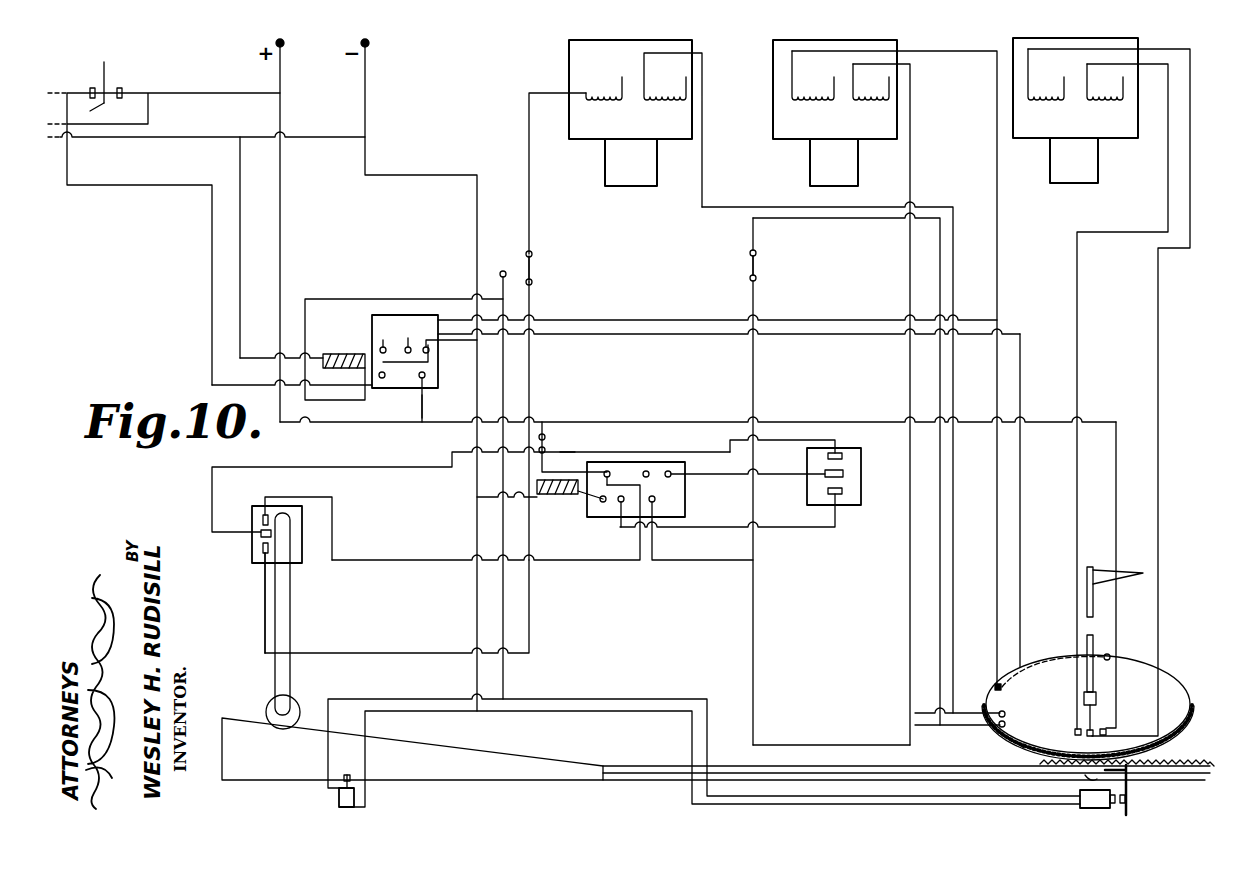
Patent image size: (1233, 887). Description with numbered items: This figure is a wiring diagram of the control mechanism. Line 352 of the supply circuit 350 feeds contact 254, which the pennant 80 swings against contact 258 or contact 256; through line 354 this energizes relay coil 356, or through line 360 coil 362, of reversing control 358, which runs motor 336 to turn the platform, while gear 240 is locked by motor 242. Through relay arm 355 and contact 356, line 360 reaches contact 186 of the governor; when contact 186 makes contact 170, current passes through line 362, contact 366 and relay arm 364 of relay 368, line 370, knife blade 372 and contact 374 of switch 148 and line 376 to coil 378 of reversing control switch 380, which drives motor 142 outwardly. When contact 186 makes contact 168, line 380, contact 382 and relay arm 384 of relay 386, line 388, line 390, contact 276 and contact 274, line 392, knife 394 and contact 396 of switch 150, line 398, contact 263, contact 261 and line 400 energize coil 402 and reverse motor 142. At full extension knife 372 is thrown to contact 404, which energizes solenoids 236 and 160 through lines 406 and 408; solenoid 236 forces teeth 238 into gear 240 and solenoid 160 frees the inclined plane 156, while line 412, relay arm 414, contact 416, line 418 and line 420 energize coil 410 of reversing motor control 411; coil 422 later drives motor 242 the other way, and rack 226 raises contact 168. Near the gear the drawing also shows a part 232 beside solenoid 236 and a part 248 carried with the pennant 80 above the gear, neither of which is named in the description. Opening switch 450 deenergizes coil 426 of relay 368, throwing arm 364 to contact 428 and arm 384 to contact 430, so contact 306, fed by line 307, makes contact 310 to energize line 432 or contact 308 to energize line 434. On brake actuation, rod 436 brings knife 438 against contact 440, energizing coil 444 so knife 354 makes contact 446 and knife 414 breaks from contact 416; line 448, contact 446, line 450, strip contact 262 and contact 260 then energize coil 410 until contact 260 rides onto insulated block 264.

The contact 440 is at (92, 88).
The rod 436 is at (108, 66).
The knife 438 is at (101, 107).
The line 352 is at (282, 78).
The supply circuit 350 is at (293, 163).
The reversing control switch 380 is at (620, 40).
The coil 378 is at (608, 103).
The coil 402 is at (668, 103).
The motor 142 is at (630, 186).
The reversing motor control 411 is at (850, 40).
The coil 410 is at (816, 103).
The coil 422 is at (876, 103).
The motor 242 is at (810, 164).
The reversing control 358 is at (1080, 38).
The coil 362 is at (1047, 103).
The relay coil 356 is at (1107, 103).
The motor 336 is at (1098, 163).
The line 420 is at (1000, 196).
The line 354 is at (1079, 364).
The line 360 is at (1160, 364).
The line 307 is at (560, 456).
The line 376 is at (531, 196).
The contact 374 is at (524, 253).
The knife blade 372 is at (532, 272).
The switch 148 is at (543, 263).
The line 370 is at (530, 378).
The contact 404 is at (500, 272).
The line 406 is at (504, 546).
The line 412 is at (398, 299).
The coil 444 is at (343, 354).
The contact 416 is at (380, 348).
The contact 446 is at (407, 346).
The relay arm 414 is at (386, 376).
The relay arm 355 is at (430, 380).
The line 448 is at (420, 404).
The line 418 is at (633, 320).
The switch 450 is at (680, 334).
The contact 396 is at (756, 252).
The knife 394 is at (756, 270).
The switch 150 is at (741, 266).
The line 398 is at (826, 218).
The line 392 is at (756, 386).
The line 390 is at (800, 745).
The line 400 is at (955, 602).
The coil 426 is at (556, 480).
The relay 368 is at (618, 464).
The contact 382 is at (648, 470).
The relay arm 384 is at (672, 472).
The relay 386 is at (667, 501).
The contact 366 is at (598, 502).
The relay arm 364 is at (617, 504).
The contact 428 is at (621, 527).
The line 432 is at (810, 527).
The contact 430 is at (706, 477).
The line 434 is at (778, 440).
The line 388 is at (694, 560).
The contact 308 is at (842, 456).
The contact 306 is at (843, 473).
The contact 310 is at (842, 491).
The contact 168 is at (262, 516).
The contact 186 is at (258, 542).
The contact 170 is at (262, 552).
The line 408 is at (408, 699).
The solenoid 160 is at (339, 798).
The inclined plane 156 is at (222, 774).
The rack 226 is at (940, 773).
The teeth 238 is at (1170, 762).
The solenoid 236 is at (1080, 792).
The bracket 232 is at (1129, 784).
The gear 240 is at (1184, 690).
The pennant 80 is at (1100, 567).
The pointer 248 is at (1096, 672).
The contact 254 is at (1087, 735).
The contact 258 is at (1075, 730).
The contact 256 is at (1106, 729).
The strip contact 262 is at (1050, 652).
The insulated block 264 is at (1110, 654).
The contact 260 is at (995, 688).
The contact 261 is at (1005, 713).
The contact 263 is at (1006, 723).
The contact 274 is at (1000, 728).
The contact 276 is at (1020, 746).